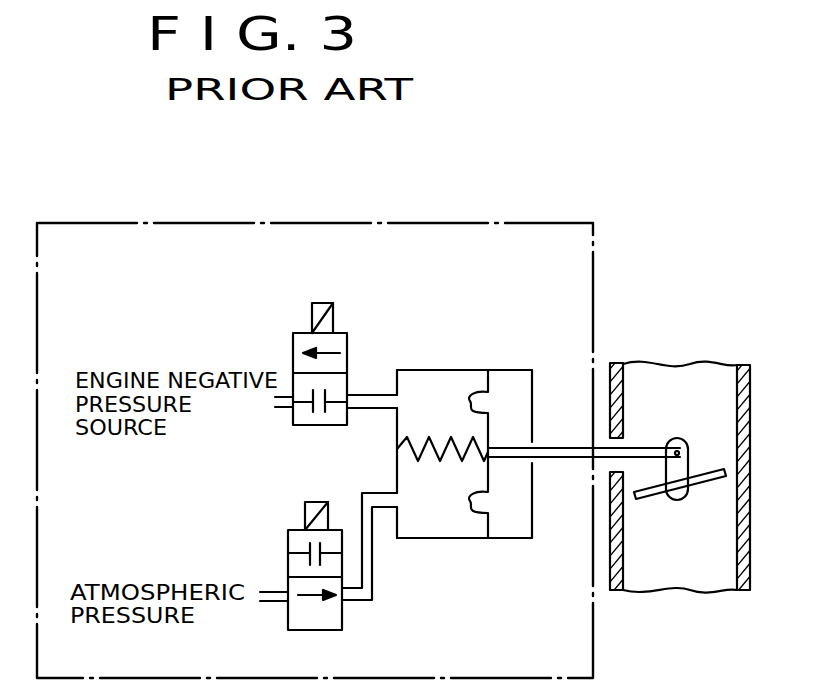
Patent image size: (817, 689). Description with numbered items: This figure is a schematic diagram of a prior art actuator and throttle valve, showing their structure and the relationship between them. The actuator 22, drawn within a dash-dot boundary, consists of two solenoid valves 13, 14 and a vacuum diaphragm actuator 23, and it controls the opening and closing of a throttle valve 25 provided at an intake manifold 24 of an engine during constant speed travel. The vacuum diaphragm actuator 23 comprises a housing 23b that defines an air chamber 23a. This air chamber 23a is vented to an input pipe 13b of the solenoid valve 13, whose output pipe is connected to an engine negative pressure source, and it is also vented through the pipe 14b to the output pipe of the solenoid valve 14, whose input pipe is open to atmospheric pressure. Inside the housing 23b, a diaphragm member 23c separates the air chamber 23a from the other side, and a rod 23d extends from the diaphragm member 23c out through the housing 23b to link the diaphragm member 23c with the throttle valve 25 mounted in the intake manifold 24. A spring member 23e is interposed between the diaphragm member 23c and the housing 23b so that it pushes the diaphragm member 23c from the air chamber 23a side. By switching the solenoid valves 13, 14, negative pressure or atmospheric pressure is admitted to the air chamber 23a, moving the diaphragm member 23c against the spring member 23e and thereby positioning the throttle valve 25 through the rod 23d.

The solenoid valve 13 is at (348, 334).
The input pipe 13b is at (375, 394).
The solenoid valve 14 is at (341, 610).
The output pipe 14b is at (360, 508).
The actuator 22 is at (463, 223).
The vacuum diaphragm actuator 23 is at (488, 370).
The air chamber 23a is at (423, 538).
The housing 23b is at (520, 539).
The diaphragm member 23c is at (486, 522).
The rod 23d is at (563, 447).
The spring member 23e is at (438, 439).
The intake manifold 24 is at (748, 556).
The throttle valve 25 is at (708, 471).